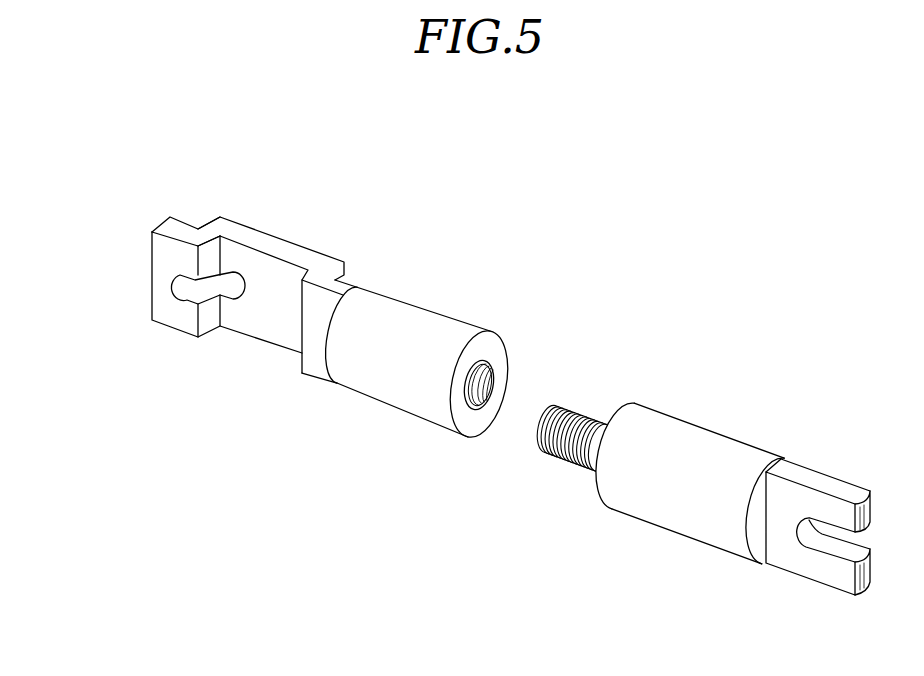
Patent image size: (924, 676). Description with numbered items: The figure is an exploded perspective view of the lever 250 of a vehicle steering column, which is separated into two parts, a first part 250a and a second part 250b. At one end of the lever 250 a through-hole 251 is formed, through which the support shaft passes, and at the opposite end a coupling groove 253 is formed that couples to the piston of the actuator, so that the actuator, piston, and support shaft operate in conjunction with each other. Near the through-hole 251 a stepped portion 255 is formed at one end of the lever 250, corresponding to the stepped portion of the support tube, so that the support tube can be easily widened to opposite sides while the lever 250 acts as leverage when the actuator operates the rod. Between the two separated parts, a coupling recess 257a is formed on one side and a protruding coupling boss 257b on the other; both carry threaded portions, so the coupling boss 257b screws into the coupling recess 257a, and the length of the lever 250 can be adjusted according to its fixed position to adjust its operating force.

The lever 250 is at (90, 123).
The first connector body 250a is at (425, 275).
The second connector body 250b is at (728, 404).
The through-hole 251 is at (197, 295).
The coupling groove 253 is at (832, 546).
The stepped portion 255 is at (272, 243).
The coupling recess 257a is at (495, 381).
The coupling boss 257b is at (560, 458).